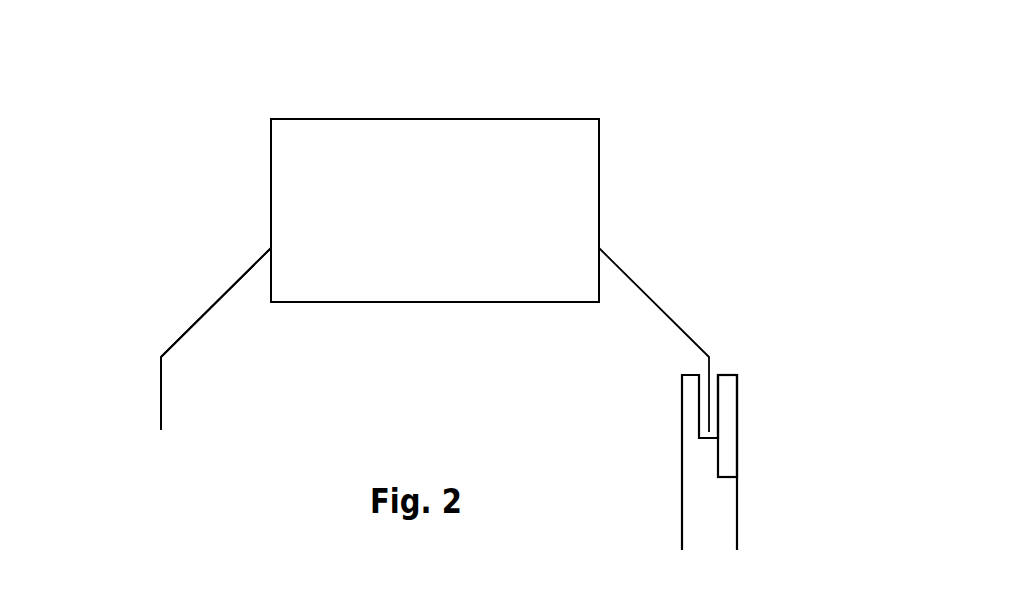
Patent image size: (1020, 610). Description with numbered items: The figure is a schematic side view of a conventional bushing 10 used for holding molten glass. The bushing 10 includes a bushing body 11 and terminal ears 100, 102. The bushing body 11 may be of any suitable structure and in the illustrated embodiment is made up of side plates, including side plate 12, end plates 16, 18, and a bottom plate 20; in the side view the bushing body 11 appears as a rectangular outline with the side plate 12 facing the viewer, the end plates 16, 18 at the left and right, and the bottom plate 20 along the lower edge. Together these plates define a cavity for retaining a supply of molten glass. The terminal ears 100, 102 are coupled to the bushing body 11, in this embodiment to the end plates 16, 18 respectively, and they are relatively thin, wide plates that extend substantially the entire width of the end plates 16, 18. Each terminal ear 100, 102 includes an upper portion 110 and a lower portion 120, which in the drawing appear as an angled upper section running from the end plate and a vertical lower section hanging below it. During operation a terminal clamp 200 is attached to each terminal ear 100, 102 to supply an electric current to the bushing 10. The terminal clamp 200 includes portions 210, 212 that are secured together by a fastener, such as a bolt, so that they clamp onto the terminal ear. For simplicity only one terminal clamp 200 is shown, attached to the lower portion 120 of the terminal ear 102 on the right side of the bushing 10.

The bushing 10 is at (478, 90).
The bushing body 11 is at (527, 118).
The side plate 12 is at (380, 156).
The end plate 16 is at (271, 136).
The end plate 18 is at (599, 139).
The bottom plate 20 is at (490, 303).
The terminal ear 100 is at (235, 283).
The terminal ear 102 is at (617, 263).
The upper portion 110 is at (178, 338).
The lower portion 120 is at (160, 405).
The terminal clamp 200 is at (743, 471).
The portion of terminal clamp 210 is at (700, 503).
The portion of terminal clamp 212 is at (727, 448).